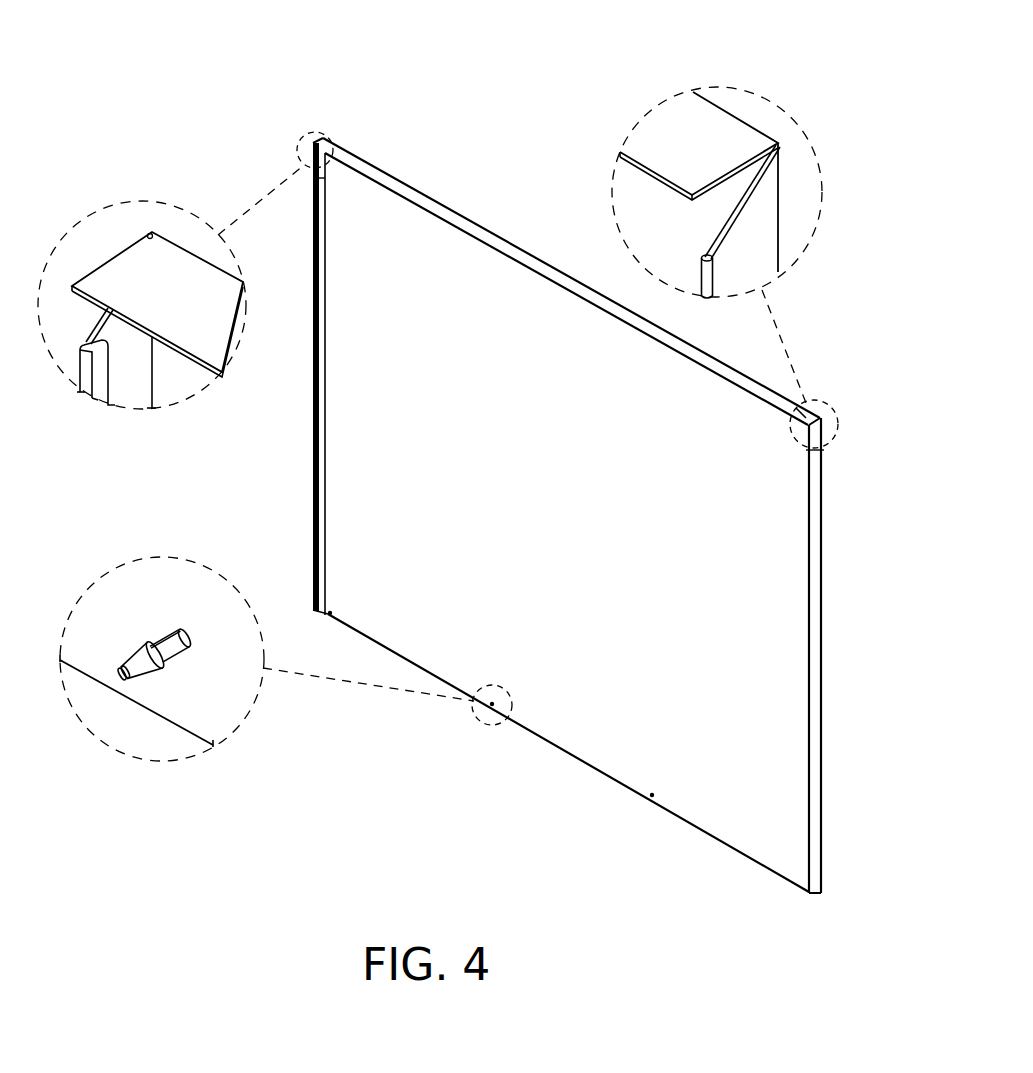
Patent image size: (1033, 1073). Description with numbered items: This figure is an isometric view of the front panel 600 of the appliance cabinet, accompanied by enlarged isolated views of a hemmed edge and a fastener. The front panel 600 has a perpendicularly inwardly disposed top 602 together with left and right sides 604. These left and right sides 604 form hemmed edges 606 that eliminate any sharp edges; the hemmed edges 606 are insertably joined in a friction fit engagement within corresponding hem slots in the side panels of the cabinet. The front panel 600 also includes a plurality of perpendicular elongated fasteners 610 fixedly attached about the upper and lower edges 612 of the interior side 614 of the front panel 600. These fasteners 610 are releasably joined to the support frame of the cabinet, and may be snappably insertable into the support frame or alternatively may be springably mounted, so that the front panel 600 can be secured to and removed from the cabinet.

The front panel 600 is at (444, 118).
The top 602 is at (715, 149).
The left and right sides 604 is at (747, 239).
The hemmed edges 606 is at (102, 385).
The perpendicular elongated fasteners 610 is at (142, 667).
The upper and lower edges 612 is at (563, 750).
The interior side 614 is at (762, 604).